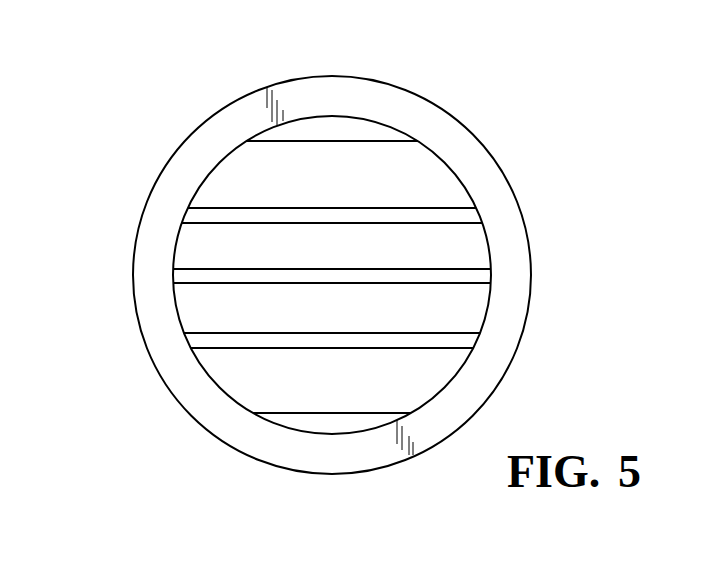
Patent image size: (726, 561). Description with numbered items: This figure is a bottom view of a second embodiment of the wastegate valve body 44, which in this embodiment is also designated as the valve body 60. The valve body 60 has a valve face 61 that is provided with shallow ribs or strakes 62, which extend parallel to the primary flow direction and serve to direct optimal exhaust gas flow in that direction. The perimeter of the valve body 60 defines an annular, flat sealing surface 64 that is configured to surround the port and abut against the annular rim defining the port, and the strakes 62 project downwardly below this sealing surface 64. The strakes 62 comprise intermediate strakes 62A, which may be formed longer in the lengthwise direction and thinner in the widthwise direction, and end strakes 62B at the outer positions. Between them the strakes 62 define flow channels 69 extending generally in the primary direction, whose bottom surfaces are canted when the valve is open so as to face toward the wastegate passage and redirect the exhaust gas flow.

The valve body 44 is at (359, 281).
The valve body 60 is at (326, 281).
The valve face 61 is at (175, 313).
The strakes 62 is at (326, 284).
The intermediate strakes 62A is at (207, 228).
The end strakes 62B is at (333, 127).
The sealing surface 64 is at (497, 352).
The flow channels 69 is at (250, 170).